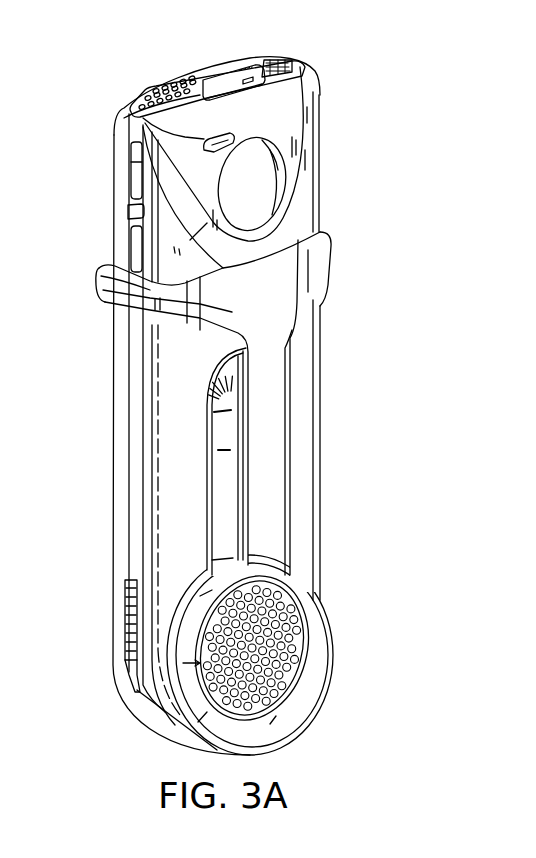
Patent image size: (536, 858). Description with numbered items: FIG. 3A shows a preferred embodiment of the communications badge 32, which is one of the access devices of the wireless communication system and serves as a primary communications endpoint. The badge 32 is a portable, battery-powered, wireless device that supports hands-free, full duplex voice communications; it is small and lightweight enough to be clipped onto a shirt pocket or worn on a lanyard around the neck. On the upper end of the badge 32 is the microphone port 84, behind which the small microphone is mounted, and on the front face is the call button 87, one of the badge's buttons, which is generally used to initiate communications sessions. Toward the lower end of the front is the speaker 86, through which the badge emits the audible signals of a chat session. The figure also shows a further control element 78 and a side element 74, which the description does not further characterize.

The communications badge 32 is at (144, 70).
The microphone port 84 is at (150, 92).
The button/latch 78 is at (283, 58).
The call button 87 is at (272, 155).
The side button 74 is at (128, 212).
The speaker 86 is at (286, 668).